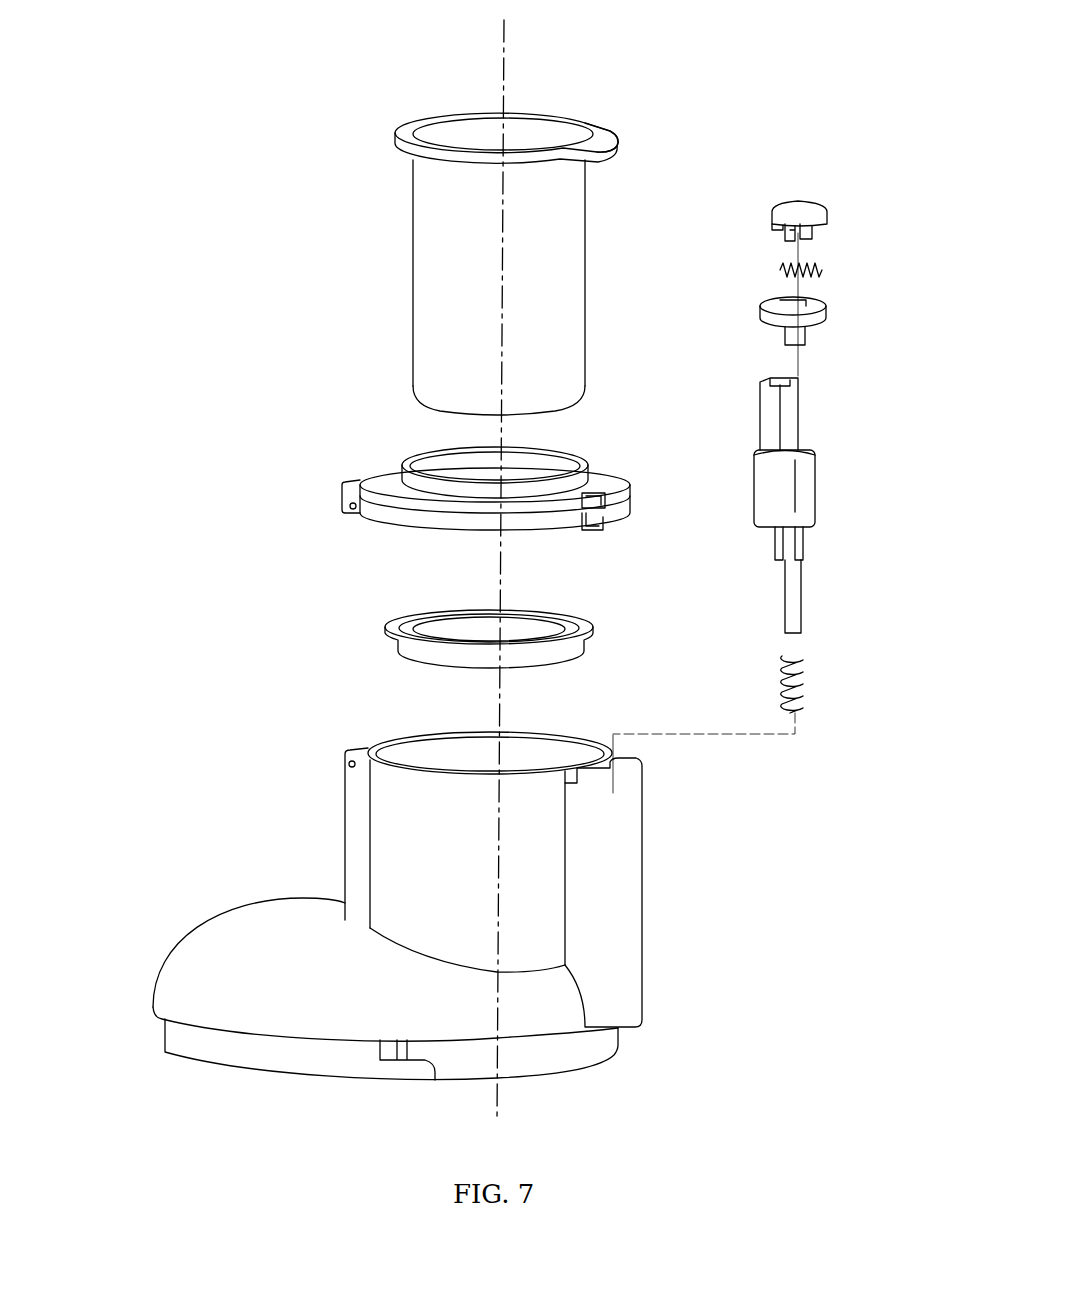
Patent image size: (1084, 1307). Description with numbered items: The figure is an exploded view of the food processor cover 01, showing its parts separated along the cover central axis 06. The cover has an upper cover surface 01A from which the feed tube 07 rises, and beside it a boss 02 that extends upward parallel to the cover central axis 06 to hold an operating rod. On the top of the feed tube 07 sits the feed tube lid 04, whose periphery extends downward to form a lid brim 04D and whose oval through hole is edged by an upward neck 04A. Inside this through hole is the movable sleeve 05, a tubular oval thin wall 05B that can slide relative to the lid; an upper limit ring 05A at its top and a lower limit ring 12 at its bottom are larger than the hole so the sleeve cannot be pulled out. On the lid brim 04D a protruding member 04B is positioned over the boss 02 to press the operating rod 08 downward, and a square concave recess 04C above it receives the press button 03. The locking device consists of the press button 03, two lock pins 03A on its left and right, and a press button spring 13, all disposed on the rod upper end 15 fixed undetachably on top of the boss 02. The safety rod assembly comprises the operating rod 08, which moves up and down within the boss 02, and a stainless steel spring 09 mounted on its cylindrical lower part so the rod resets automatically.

The food processor cover 01 is at (330, 943).
The upper cover surface 01A is at (325, 929).
The boss 02 is at (612, 806).
The press button 03 is at (828, 211).
The lock pins 03A is at (815, 237).
The feed tube lid 04 is at (434, 461).
The upward neck 04A is at (415, 451).
The protruding member 04B is at (600, 521).
The square concave recess 04C is at (659, 447).
The lid brim 04D is at (375, 515).
The movable sleeve 05 is at (573, 236).
The upper limit ring 05A is at (668, 105).
The container wall 05B is at (565, 248).
The cover central axis 06 is at (504, 28).
The feed tube 07 is at (539, 879).
The operating rod 08 is at (805, 480).
The stainless steel spring 09 is at (803, 658).
The lower limit ring 12 is at (400, 652).
The press button spring 13 is at (822, 270).
The rod upper end 15 is at (827, 313).